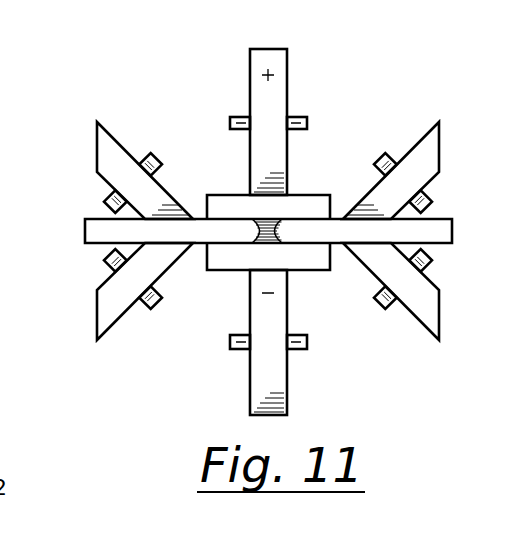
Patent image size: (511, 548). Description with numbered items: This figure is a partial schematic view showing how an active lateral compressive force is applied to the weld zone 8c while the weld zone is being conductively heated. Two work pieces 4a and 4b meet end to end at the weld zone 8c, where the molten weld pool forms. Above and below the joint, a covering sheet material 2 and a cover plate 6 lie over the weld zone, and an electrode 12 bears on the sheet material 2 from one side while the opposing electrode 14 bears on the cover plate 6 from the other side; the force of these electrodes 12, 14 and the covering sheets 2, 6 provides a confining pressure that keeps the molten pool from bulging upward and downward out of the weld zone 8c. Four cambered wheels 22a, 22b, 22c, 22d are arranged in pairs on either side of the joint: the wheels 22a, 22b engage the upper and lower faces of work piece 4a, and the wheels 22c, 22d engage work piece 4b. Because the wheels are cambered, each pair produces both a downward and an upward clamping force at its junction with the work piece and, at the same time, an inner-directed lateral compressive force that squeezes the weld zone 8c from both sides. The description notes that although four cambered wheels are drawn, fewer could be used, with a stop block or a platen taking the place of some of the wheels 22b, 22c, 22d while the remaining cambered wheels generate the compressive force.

The sheet material 2 is at (318, 212).
The work piece 4a is at (87, 236).
The work piece 4b is at (437, 235).
The cover plate 6 is at (318, 270).
The weld zone 8c is at (252, 240).
The electrode 12 is at (278, 102).
The electrode 14 is at (275, 372).
The cambered wheel 22a is at (97, 143).
The cambered wheel 22b is at (103, 315).
The cambered wheel 22c is at (440, 150).
The cambered wheel 22d is at (428, 306).